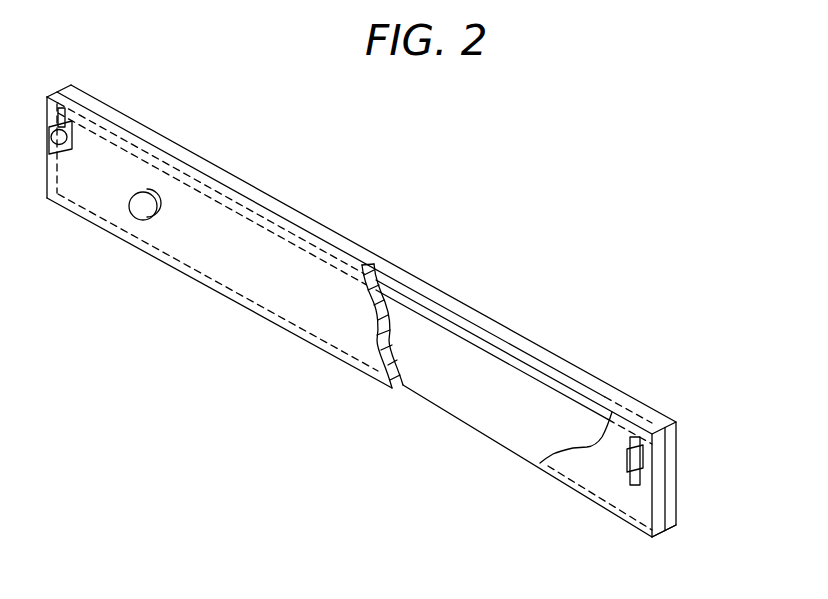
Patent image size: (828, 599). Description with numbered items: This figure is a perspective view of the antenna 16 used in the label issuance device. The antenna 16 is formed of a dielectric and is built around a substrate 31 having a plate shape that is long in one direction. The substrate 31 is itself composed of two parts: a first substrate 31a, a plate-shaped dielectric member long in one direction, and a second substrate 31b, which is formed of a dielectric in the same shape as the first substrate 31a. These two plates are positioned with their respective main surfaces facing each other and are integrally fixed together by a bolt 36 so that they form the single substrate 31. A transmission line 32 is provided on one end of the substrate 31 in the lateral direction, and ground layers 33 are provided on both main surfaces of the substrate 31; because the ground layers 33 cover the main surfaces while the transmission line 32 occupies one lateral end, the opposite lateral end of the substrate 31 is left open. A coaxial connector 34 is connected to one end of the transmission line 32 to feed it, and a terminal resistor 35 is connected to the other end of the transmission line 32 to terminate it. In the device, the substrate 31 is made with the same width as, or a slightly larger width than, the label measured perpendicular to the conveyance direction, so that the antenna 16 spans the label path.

The antenna 16 is at (690, 177).
The substrate 31 is at (724, 507).
The first substrate 31a is at (677, 450).
The second substrate 31b is at (668, 503).
The transmission line 32 is at (558, 382).
The ground layer 33 is at (650, 408).
The coaxial connector 34 is at (61, 156).
The terminal resistor 35 is at (628, 467).
The bolt 36 is at (140, 222).